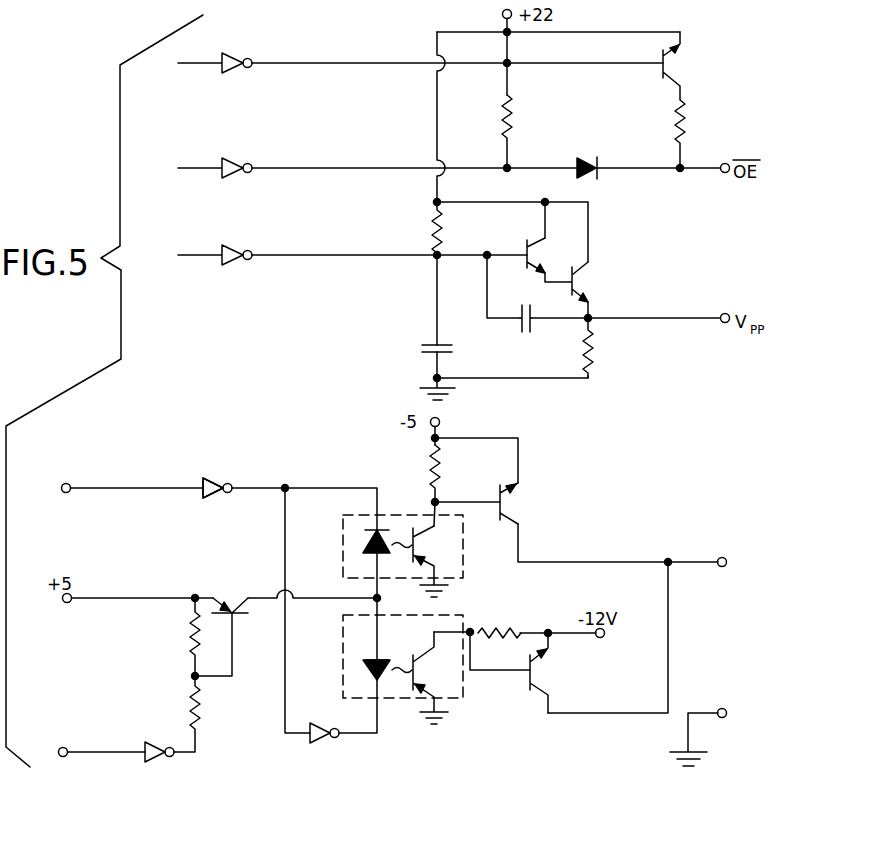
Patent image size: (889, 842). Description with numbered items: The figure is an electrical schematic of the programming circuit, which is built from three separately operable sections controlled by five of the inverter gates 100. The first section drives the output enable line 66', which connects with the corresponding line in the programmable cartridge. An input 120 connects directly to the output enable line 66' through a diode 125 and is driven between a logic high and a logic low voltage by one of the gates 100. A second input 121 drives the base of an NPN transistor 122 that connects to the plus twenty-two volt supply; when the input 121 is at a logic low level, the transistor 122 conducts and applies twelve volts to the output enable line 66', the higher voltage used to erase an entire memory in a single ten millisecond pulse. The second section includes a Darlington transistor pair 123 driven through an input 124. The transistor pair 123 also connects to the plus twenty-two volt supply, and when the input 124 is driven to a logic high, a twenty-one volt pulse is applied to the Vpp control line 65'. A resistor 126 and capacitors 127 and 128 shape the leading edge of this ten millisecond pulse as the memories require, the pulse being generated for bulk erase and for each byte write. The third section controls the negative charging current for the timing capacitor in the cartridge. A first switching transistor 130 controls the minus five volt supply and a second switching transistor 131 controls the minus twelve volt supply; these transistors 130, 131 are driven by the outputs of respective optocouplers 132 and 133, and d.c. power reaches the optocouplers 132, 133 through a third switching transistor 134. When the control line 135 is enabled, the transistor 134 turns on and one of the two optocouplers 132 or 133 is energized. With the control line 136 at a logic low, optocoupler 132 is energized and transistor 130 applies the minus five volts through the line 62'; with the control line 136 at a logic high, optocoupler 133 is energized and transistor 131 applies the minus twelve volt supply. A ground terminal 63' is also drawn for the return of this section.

The inverter gate 100 is at (240, 70).
The input 120 is at (322, 170).
The second input 121 is at (310, 65).
The NPN transistor 122 is at (746, 25).
The Darlington transistor pair 123 is at (590, 280).
The input 124 is at (328, 257).
The diode 125 is at (590, 157).
The resistor 126 is at (447, 234).
The capacitor 127 is at (421, 349).
The capacitor 128 is at (558, 347).
The first switching transistor 130 is at (512, 500).
The second switching transistor 131 is at (540, 672).
The optocoupler 132 is at (408, 515).
The optocoupler 133 is at (458, 613).
The third switching transistor 134 is at (234, 600).
The control line 135 is at (194, 743).
The control line 136 is at (263, 490).
The line 62' is at (737, 583).
The ground terminal 63' is at (743, 701).
The Vpp control line 65' is at (719, 297).
The output enable line 66' is at (720, 192).